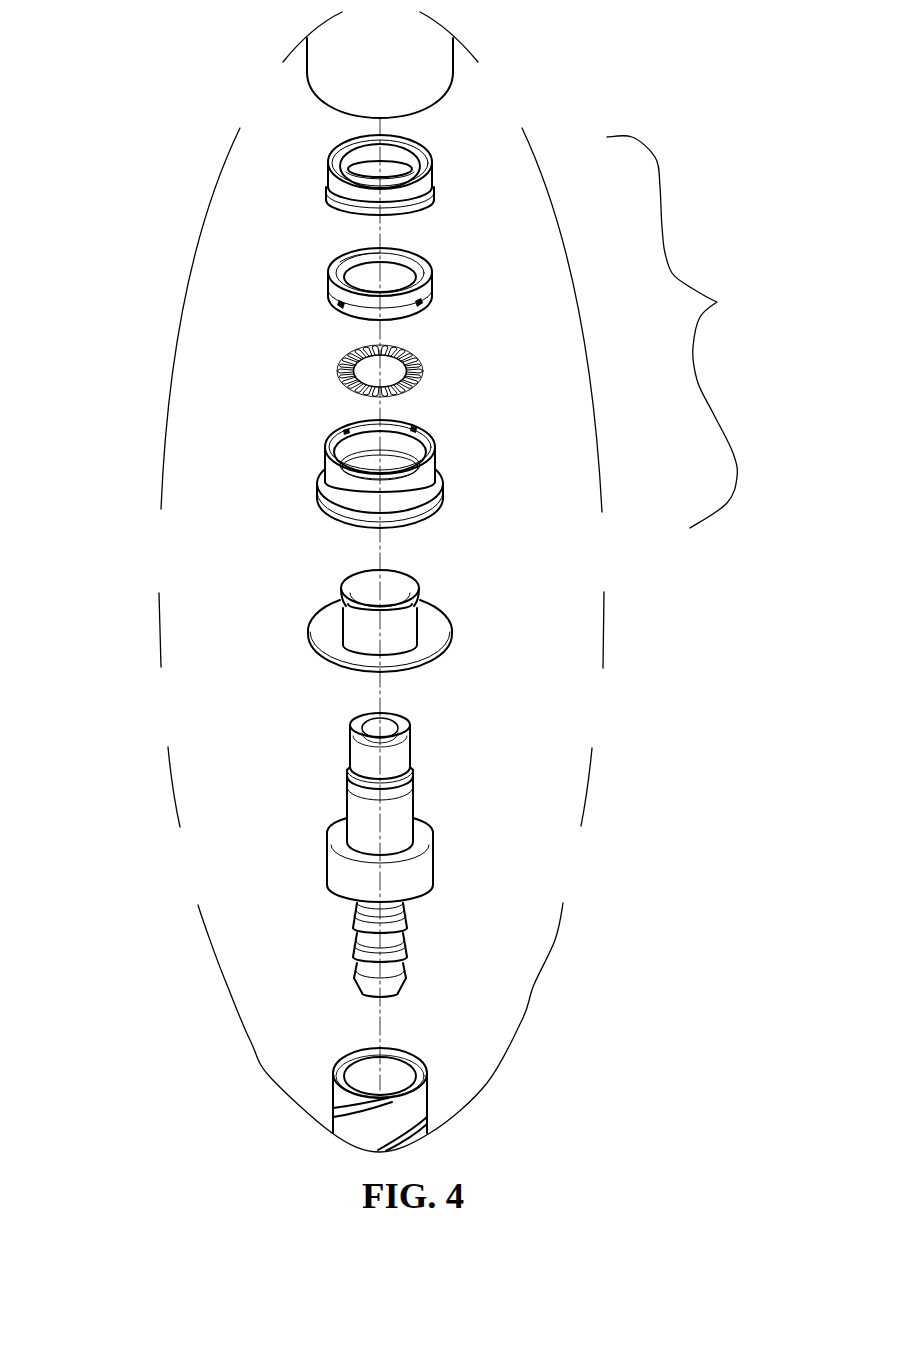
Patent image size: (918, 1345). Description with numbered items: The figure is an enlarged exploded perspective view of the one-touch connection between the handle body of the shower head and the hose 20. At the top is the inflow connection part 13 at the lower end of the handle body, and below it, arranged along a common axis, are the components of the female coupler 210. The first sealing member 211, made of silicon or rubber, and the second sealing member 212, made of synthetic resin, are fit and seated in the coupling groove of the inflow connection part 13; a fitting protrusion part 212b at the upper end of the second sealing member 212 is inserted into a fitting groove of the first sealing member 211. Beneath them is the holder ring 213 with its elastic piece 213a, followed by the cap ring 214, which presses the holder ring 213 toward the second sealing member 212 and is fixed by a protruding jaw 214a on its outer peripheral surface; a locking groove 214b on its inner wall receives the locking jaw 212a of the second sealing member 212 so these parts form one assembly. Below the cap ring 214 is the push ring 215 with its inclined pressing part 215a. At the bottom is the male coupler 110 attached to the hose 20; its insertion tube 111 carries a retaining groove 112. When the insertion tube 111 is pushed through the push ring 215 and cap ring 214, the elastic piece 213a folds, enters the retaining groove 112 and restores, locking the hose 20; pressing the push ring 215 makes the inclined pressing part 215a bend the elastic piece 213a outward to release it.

The inflow connection part 13 is at (428, 60).
The hose 20 is at (450, 1097).
The male coupler 110 is at (115, 773).
The insertion tube 111 is at (355, 750).
The retaining groove 112 is at (350, 786).
The female coupler 210 is at (687, 332).
The first sealing member 211 is at (453, 172).
The second sealing member 212 is at (455, 278).
The locking jaw 212a is at (337, 306).
The fitting protrusion part 212b is at (345, 283).
The holder ring 213 is at (445, 367).
The elastic piece 213a is at (347, 364).
The cap ring 214 is at (465, 474).
The protruding jaw 214a is at (332, 460).
The locking groove 214b is at (340, 433).
The push ring 215 is at (465, 598).
The inclined pressing part 215a is at (351, 607).